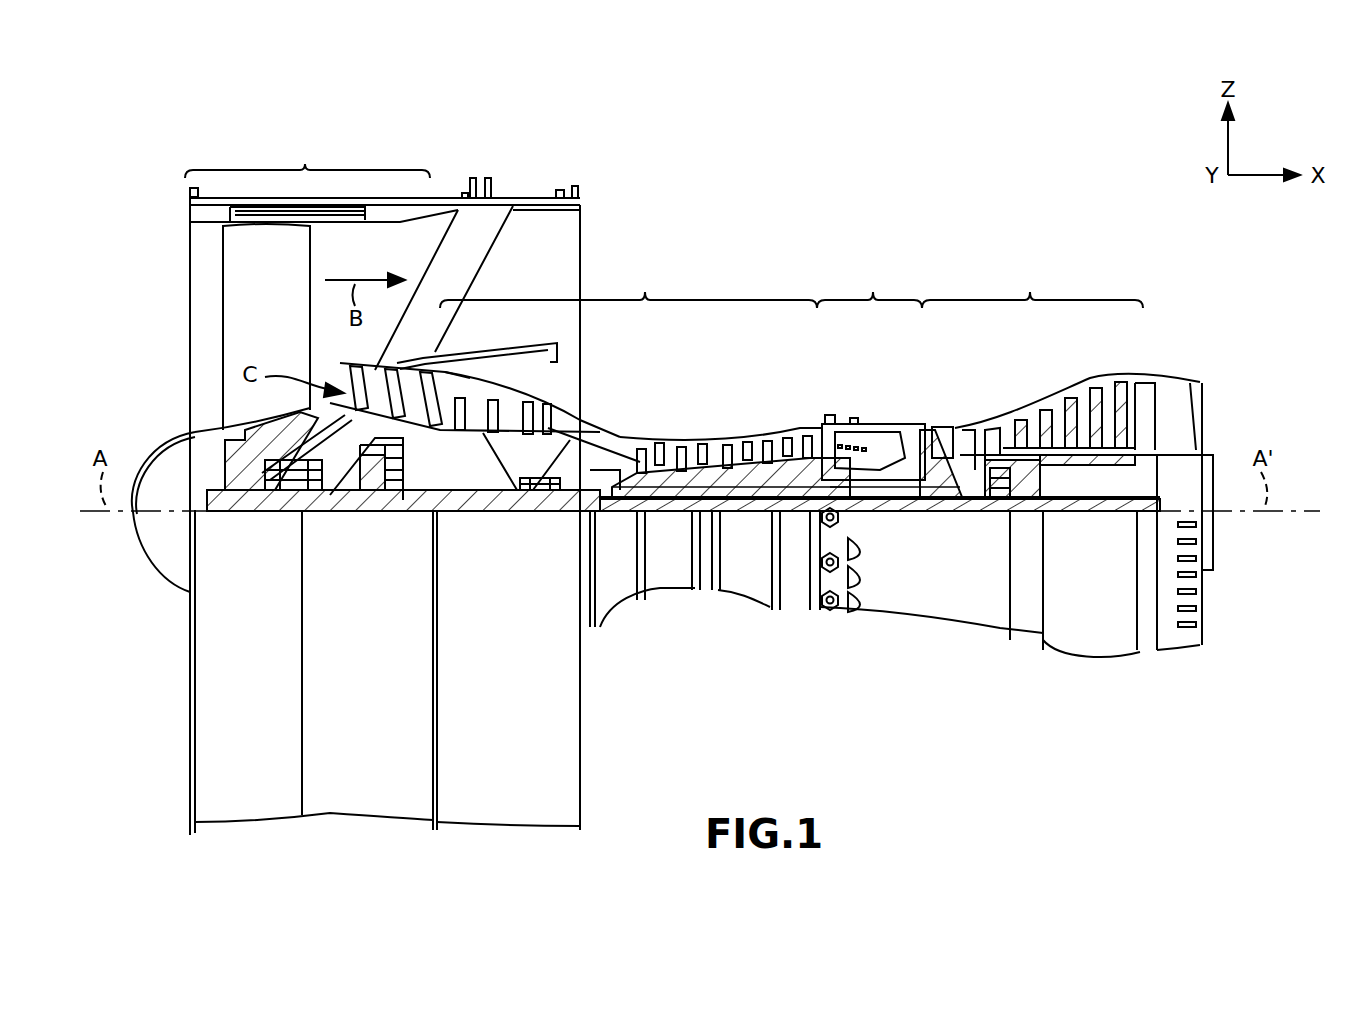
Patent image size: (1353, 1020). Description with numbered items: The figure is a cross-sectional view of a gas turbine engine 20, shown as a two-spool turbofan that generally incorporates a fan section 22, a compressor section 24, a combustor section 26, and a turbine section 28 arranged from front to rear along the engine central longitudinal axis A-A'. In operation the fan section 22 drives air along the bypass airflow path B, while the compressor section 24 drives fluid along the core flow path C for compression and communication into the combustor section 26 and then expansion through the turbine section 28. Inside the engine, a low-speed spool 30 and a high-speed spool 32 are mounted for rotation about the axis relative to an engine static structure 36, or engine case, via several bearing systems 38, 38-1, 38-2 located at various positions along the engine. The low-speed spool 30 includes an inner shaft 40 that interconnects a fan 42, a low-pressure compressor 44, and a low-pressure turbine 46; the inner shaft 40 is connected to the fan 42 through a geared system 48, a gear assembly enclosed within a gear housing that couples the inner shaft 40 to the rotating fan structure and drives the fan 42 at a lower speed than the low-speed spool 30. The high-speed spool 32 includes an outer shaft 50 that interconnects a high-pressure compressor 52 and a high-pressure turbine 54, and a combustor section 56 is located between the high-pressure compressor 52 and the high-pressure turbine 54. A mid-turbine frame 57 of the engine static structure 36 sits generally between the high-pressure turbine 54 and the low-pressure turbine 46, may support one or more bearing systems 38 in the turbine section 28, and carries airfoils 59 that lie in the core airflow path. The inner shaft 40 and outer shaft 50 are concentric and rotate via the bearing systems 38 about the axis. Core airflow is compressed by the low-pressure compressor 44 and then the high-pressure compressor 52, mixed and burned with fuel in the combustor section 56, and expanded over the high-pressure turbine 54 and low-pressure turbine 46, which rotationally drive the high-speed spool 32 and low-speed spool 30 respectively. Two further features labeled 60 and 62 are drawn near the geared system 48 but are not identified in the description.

The gas turbine engine 20 is at (918, 240).
The fan section 22 is at (305, 170).
The compressor section 24 is at (645, 300).
The combustor section 26 is at (873, 300).
The turbine section 28 is at (1030, 300).
The low-speed spool 30 is at (752, 514).
The high-speed spool 32 is at (790, 480).
The engine static structure 36 is at (795, 598).
The bearing system 38 is at (986, 500).
The bearing system 38-1 is at (270, 490).
The bearing system 38-2 is at (532, 497).
The inner shaft 40 is at (603, 512).
The fan 42 is at (275, 324).
The low-pressure compressor 44 is at (512, 408).
The low-pressure turbine 46 is at (1076, 395).
The geared system 48 is at (397, 513).
The outer shaft 50 is at (866, 499).
The high-pressure compressor 52 is at (732, 470).
The high-pressure turbine 54 is at (942, 427).
The combustor section 56 is at (866, 445).
The mid-turbine frame 57 is at (985, 438).
The airfoils 59 is at (990, 445).
The fan shaft 60 is at (403, 490).
The gear 62 is at (402, 463).